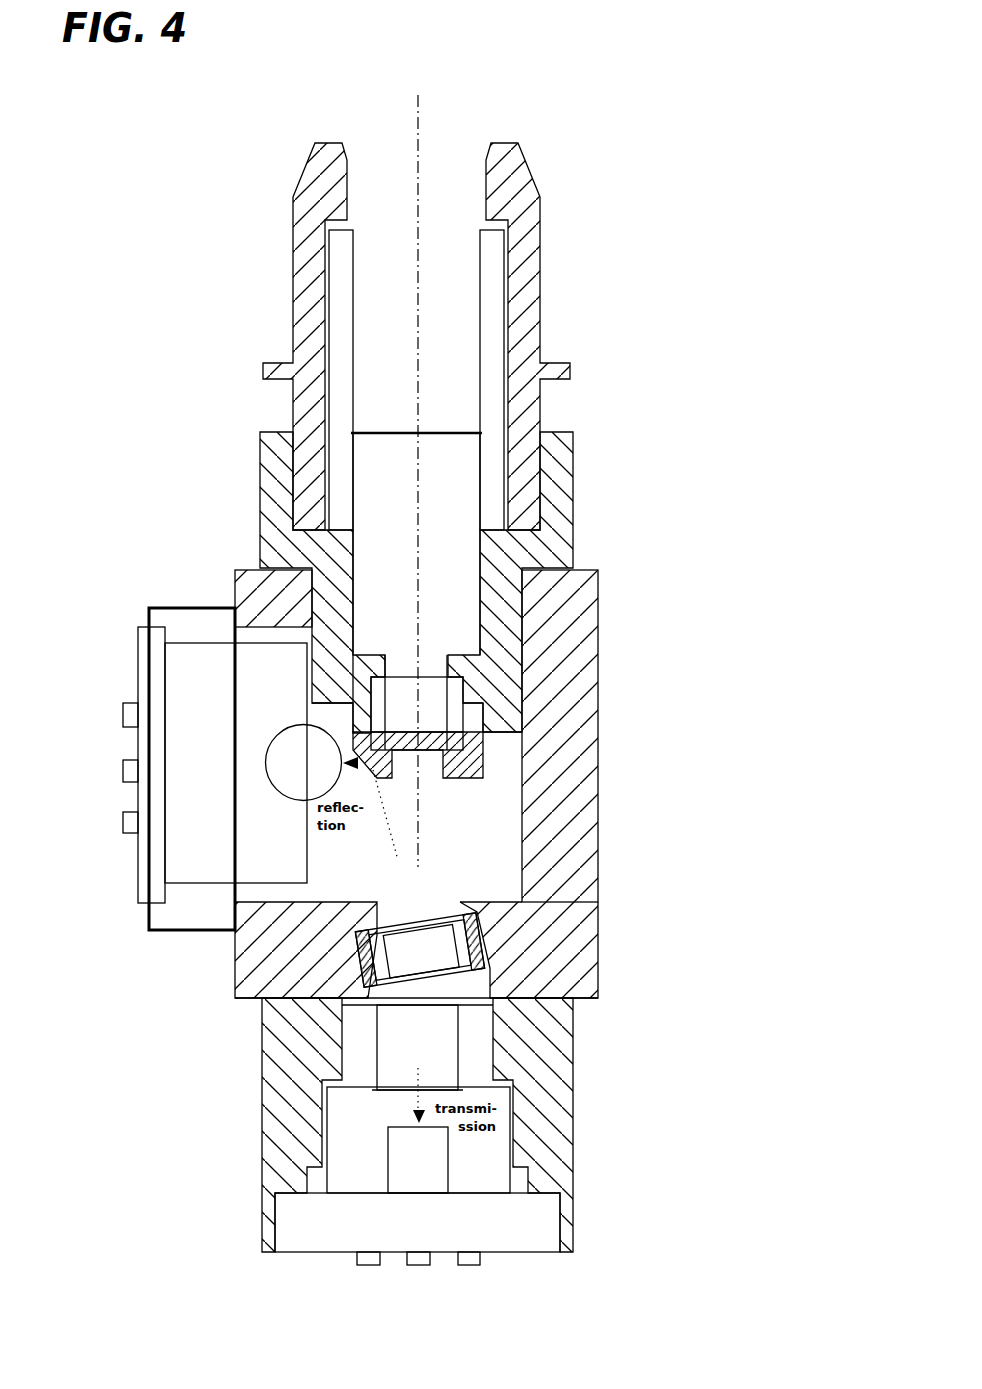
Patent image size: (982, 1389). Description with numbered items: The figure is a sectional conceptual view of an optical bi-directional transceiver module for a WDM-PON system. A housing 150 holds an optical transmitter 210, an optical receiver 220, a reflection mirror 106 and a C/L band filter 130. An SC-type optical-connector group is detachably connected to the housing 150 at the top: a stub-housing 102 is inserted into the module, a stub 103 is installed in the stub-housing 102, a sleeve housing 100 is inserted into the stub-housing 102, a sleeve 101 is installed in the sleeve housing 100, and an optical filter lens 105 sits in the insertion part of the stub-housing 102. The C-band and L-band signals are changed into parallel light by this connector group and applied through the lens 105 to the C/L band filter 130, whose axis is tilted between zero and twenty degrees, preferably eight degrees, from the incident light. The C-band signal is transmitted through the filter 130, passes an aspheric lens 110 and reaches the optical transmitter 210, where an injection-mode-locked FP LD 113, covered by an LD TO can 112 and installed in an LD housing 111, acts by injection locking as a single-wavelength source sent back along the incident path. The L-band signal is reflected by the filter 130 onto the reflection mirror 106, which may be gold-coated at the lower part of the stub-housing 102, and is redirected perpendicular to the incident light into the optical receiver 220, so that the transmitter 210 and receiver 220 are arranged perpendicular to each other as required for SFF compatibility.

The sleeve housing 100 is at (532, 408).
The sleeve 101 is at (497, 485).
The stub-housing 102 is at (575, 530).
The stub 103 is at (575, 617).
The optical filter lens 105 is at (442, 713).
The reflection mirror 106 is at (482, 760).
The housing 150 is at (582, 885).
The C/L band filter 130 is at (440, 980).
The aspheric lens 110 is at (457, 1070).
The LD housing 111 is at (562, 1142).
The LD TO can 112 is at (490, 1185).
The injection-mode-locked FP LD 113 is at (433, 1168).
The optical receiver 220 is at (153, 958).
The optical transmitter 210 is at (265, 1268).